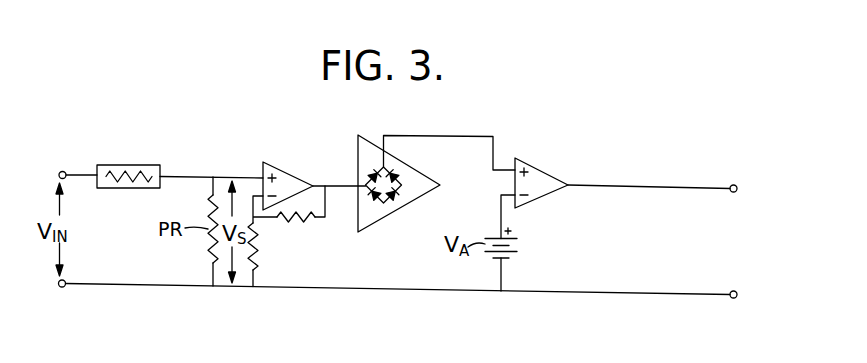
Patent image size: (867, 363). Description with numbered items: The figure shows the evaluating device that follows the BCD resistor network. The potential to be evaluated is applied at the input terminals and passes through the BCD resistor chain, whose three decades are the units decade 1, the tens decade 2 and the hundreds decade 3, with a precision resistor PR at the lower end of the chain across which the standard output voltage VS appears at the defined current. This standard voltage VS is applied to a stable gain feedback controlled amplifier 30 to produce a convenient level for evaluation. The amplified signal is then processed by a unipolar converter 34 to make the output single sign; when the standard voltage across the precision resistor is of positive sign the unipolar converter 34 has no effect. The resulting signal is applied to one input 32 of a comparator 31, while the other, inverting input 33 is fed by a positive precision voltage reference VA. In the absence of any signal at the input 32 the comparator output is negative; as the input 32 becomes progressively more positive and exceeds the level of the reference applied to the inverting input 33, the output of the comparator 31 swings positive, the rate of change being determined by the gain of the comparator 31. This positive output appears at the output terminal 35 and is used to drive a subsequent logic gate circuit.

The units decade 1 is at (128, 158).
The tens decade 2 is at (128, 158).
The hundreds decade 3 is at (125, 165).
The stable gain feedback controlled amplifier 30 is at (284, 170).
The comparator 31 is at (541, 175).
The comparator input 32 is at (502, 167).
The inverting input 33 is at (497, 196).
The unipolar converter 34 is at (365, 152).
The output terminal 35 is at (732, 184).